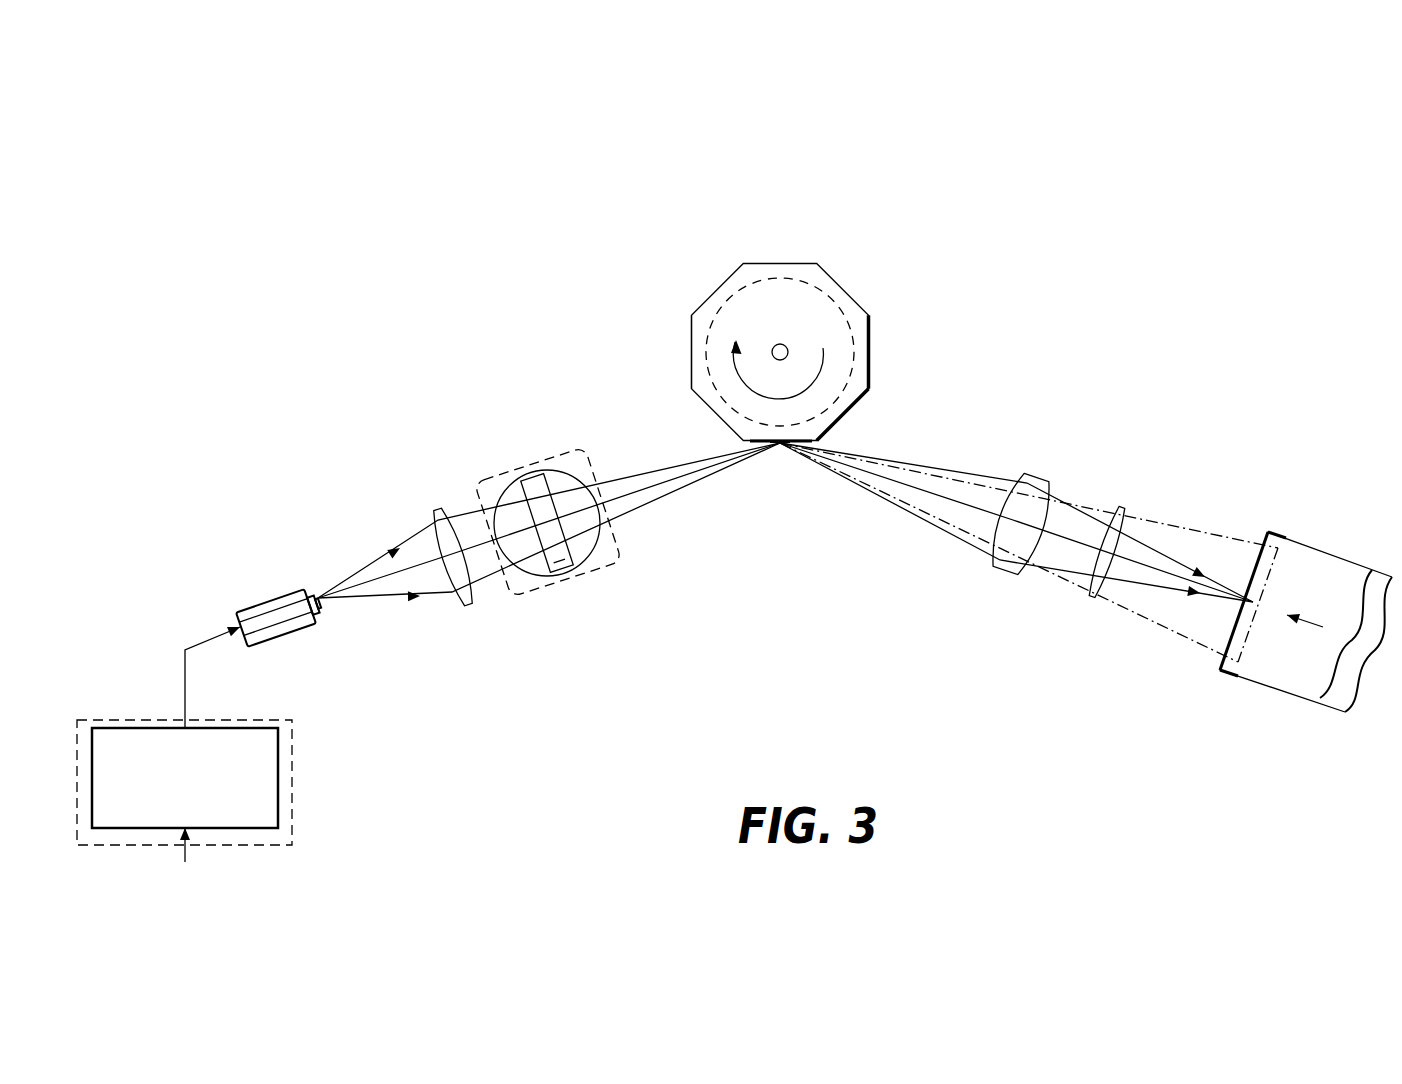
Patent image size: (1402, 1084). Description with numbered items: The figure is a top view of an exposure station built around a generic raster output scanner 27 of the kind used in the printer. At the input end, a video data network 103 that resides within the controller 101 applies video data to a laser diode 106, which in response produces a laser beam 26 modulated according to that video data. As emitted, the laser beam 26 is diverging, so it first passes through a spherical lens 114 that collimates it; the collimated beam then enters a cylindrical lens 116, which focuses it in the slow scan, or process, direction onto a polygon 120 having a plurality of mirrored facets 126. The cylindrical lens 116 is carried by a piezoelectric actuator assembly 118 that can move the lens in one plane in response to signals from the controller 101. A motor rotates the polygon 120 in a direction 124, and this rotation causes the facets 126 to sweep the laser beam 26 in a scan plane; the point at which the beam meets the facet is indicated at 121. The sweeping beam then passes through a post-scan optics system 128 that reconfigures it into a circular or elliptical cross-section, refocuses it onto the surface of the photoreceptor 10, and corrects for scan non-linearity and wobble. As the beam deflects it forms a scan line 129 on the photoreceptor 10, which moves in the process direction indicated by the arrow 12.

The raster output scanner 27 is at (668, 223).
The polygon 120 is at (792, 243).
The mirrored facets 126 is at (693, 352).
The direction 124 is at (817, 380).
The facet scan point 121 is at (780, 447).
The laser beam 26 is at (668, 460).
The piezoelectric actuator assembly 118 is at (498, 475).
The cylindrical lens 116 is at (562, 573).
The spherical lens 114 is at (465, 595).
The laser diode 106 is at (282, 635).
The controller 101 is at (165, 718).
The video data network 103 is at (207, 725).
The post-scan optics system 128 is at (1064, 510).
The scan line 129 is at (1277, 570).
The process direction 12 is at (1302, 615).
The photoreceptor 10 is at (1273, 673).